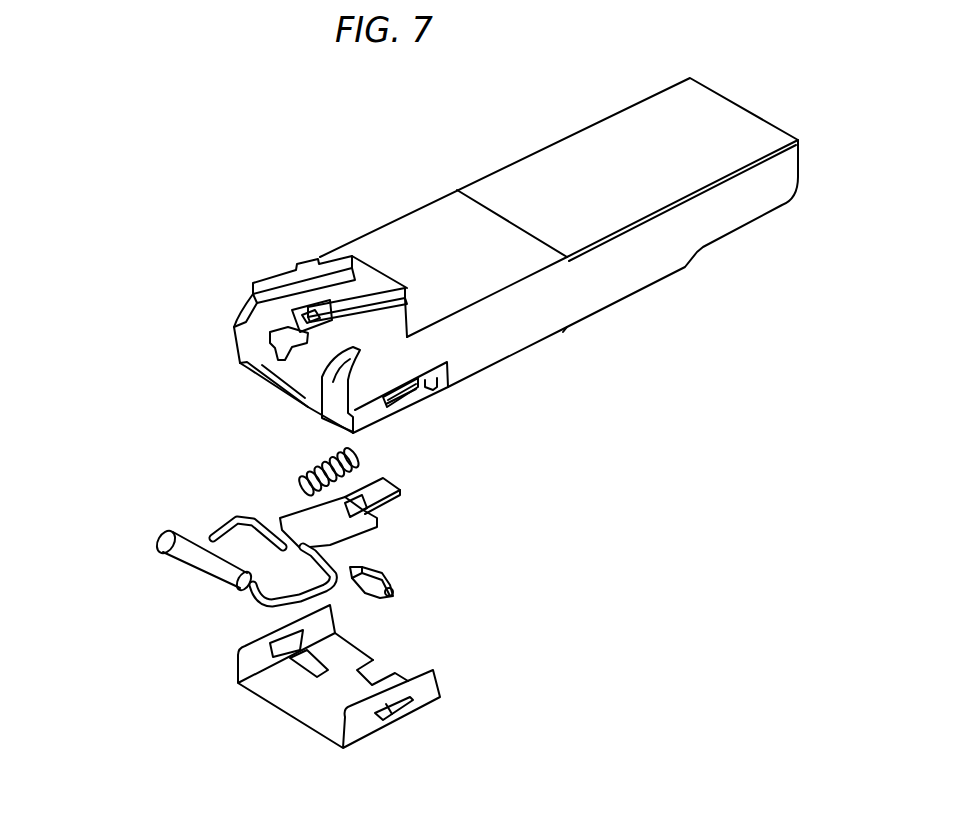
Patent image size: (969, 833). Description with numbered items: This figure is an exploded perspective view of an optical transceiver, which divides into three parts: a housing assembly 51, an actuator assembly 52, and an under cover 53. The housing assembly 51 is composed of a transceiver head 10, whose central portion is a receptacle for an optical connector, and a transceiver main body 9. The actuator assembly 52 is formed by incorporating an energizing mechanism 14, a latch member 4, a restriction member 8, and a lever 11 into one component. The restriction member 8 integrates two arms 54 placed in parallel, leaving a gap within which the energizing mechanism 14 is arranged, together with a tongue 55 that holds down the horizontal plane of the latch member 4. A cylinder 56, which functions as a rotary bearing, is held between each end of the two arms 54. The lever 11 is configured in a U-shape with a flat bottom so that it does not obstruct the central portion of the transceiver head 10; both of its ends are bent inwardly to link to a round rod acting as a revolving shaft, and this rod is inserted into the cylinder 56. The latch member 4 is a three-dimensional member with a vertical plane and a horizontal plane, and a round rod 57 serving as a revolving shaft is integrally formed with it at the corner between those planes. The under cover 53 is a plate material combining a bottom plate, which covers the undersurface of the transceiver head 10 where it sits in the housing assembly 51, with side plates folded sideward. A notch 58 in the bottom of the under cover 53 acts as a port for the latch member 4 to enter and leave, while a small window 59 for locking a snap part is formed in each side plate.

The latch member 4 is at (400, 562).
The restriction member 8 is at (424, 505).
The transceiver main body 9 is at (480, 180).
The transceiver head 10 is at (283, 267).
The lever 11 is at (233, 593).
The energizing mechanism 14 is at (318, 464).
The housing assembly 51 is at (585, 337).
The actuator assembly 52 is at (205, 574).
The under cover 53 is at (260, 702).
The arm 54 is at (300, 507).
The tongue 55 is at (400, 478).
The cylinder 56 is at (227, 533).
The round rod 57 is at (400, 587).
The notch 58 is at (380, 668).
The small window 59 is at (407, 692).